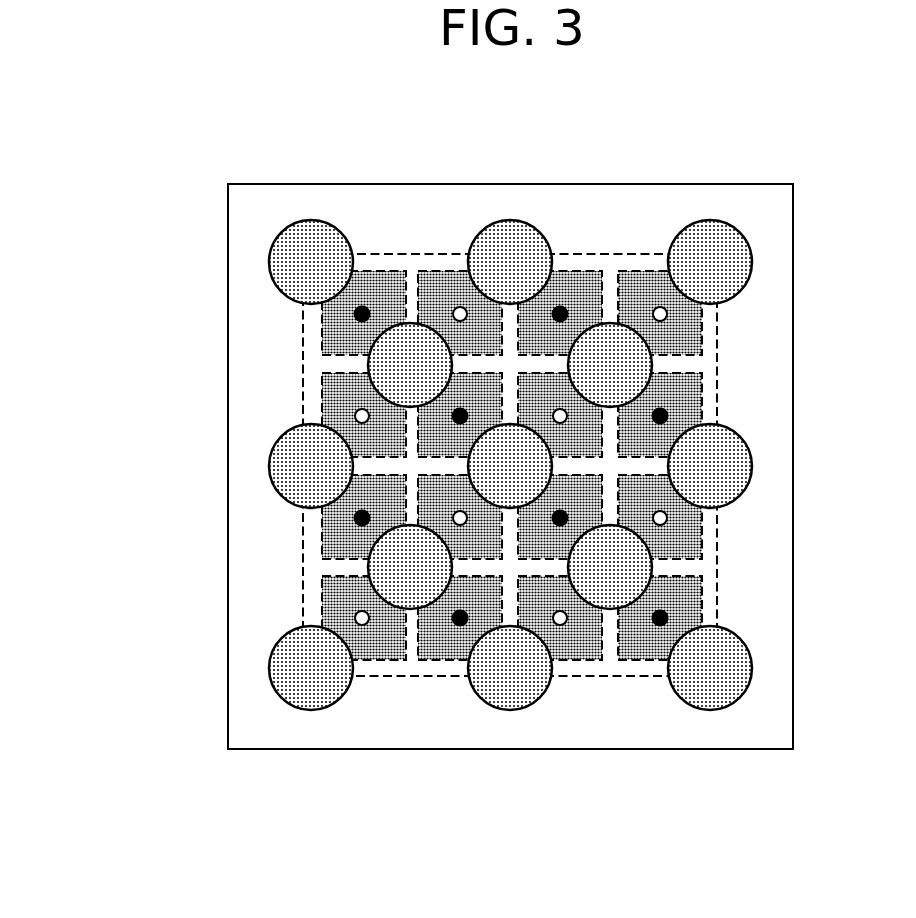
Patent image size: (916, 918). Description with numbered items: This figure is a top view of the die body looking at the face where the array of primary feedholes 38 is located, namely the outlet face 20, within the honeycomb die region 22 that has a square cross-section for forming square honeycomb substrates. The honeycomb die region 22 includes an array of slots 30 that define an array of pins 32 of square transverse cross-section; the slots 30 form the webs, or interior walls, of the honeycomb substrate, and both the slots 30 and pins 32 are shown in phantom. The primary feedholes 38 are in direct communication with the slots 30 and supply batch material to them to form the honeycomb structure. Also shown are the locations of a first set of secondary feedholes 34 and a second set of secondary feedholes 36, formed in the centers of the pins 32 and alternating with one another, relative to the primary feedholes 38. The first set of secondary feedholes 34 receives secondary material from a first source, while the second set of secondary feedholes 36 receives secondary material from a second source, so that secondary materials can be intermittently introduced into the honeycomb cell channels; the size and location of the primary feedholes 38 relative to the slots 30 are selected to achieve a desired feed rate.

The outlet face 20 is at (703, 653).
The honeycomb die region 22 is at (557, 252).
The slots 30 is at (640, 568).
The pins 32 is at (620, 400).
The first set of secondary feedholes 34 is at (301, 522).
The second set of secondary feedholes 36 is at (502, 620).
The primary feedholes 38 is at (245, 248).